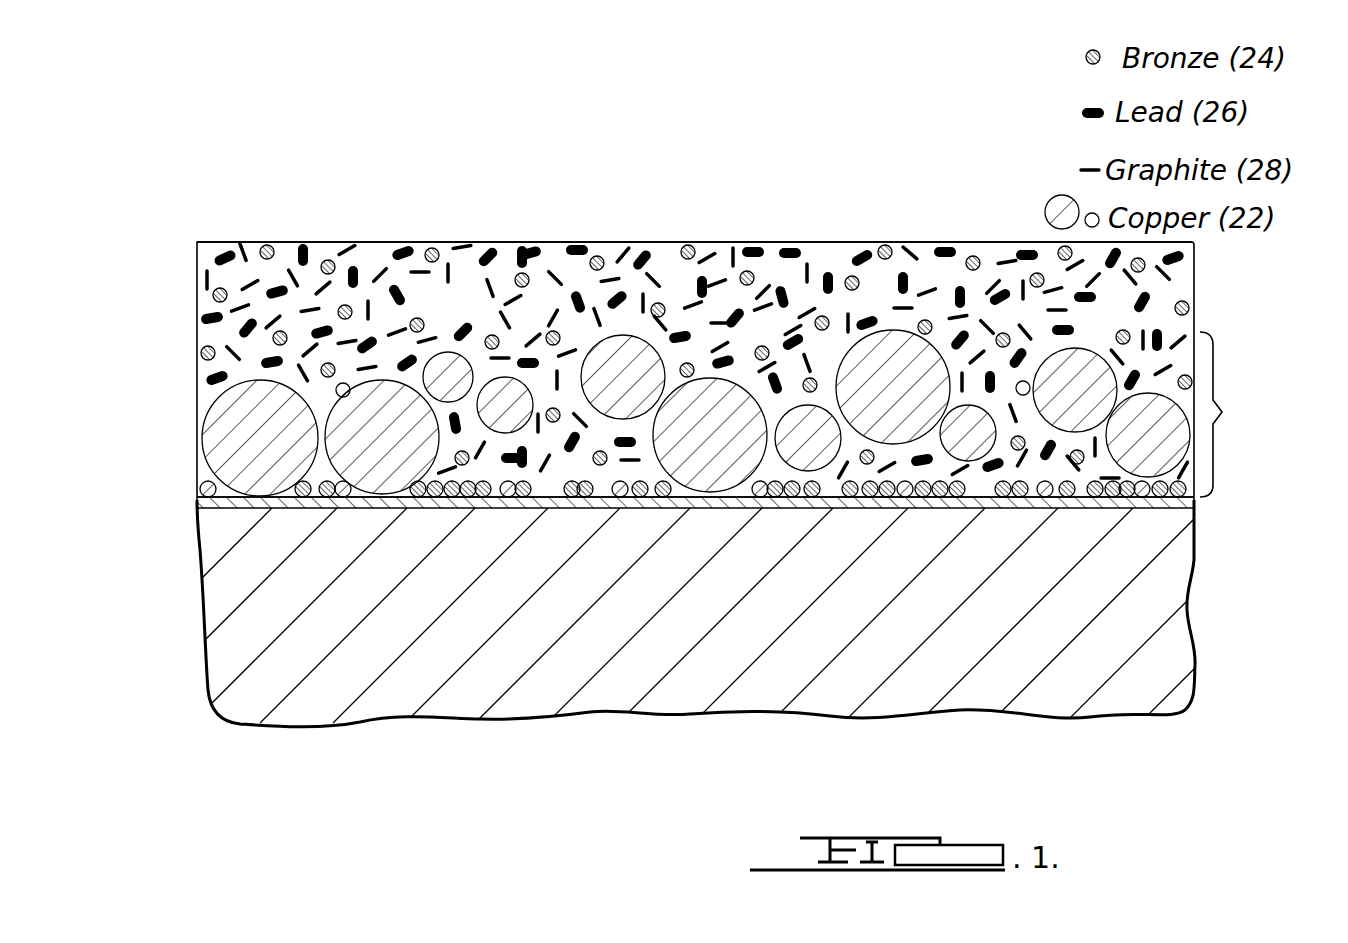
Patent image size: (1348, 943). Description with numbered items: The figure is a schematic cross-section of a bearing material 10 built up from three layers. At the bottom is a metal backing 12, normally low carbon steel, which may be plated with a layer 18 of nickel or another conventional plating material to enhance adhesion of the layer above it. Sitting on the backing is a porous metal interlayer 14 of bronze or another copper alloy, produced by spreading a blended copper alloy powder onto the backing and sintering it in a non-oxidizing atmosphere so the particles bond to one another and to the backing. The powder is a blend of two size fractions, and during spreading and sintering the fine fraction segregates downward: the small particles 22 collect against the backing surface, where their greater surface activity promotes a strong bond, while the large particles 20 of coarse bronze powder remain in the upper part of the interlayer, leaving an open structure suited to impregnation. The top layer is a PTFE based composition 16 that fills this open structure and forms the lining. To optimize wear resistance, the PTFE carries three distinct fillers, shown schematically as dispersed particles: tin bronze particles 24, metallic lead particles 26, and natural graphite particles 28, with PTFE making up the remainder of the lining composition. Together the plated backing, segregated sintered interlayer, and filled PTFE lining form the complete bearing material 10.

The bearing material 10 is at (1244, 538).
The metal backing 12 is at (1155, 605).
The porous metal interlayer 14 is at (738, 369).
The PTFE based composition 16 is at (1115, 321).
The layer of nickel plating 18 is at (1190, 505).
The large particles 20 is at (886, 362).
The small particles 22 is at (338, 392).
The tin bronze particles 24 is at (433, 249).
The metallic lead particles 26 is at (528, 310).
The natural graphite particles 28 is at (672, 261).